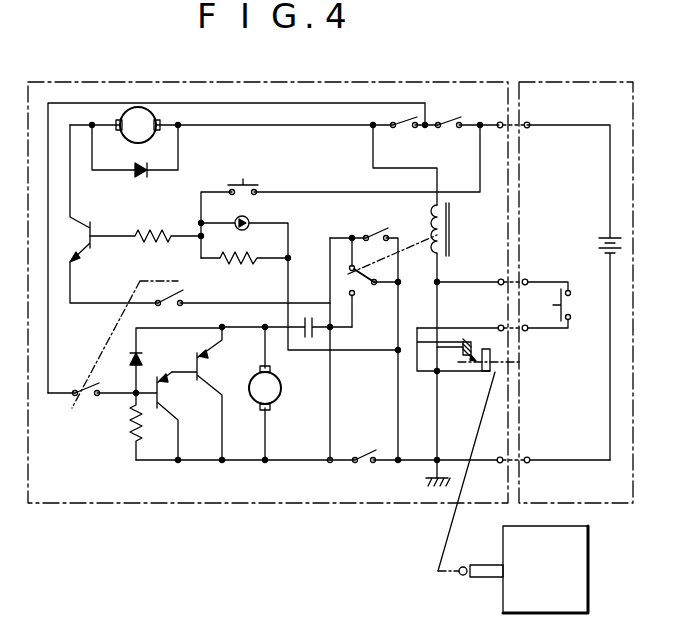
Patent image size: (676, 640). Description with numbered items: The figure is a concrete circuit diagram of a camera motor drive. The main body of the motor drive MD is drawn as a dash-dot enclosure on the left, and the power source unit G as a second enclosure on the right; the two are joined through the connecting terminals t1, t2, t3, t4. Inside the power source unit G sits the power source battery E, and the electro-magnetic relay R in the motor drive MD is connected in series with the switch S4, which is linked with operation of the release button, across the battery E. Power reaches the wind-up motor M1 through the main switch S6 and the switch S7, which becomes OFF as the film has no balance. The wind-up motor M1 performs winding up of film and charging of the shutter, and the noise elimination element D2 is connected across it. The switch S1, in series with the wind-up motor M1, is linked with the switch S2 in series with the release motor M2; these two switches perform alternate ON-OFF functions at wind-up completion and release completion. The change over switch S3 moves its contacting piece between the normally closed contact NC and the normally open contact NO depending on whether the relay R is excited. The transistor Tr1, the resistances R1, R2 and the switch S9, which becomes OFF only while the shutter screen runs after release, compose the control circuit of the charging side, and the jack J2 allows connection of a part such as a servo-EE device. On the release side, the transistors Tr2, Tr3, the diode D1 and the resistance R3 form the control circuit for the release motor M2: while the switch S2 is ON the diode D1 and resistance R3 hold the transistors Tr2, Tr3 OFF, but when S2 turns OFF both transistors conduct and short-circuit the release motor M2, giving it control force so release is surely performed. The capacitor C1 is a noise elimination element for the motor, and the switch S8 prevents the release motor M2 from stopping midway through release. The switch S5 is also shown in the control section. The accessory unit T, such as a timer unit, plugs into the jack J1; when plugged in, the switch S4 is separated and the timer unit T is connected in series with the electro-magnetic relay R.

The main body of a motor drive MD is at (318, 82).
The power source unit G is at (555, 82).
The wind-up motor M1 is at (140, 107).
The release motor M2 is at (281, 393).
The diode D1 is at (176, 360).
The noise elimination element D2 is at (135, 163).
The transistor Tr1 is at (114, 214).
The transistor Tr2 is at (168, 416).
The transistor Tr3 is at (201, 393).
The resistance R1 is at (145, 224).
The resistance R2 is at (244, 249).
The resistance R3 is at (150, 426).
The electro-magnetic relay R is at (421, 292).
The noise elimination element C1 is at (316, 342).
The jack J1 is at (468, 368).
The jack J2 is at (299, 274).
The switch S1 is at (201, 342).
The switch S2 is at (92, 406).
The change over switch S3 is at (392, 281).
The switch S4 is at (563, 308).
The switch S5 is at (364, 331).
The main switch S6 is at (468, 139).
The switch S7 is at (415, 139).
The switch S8 is at (286, 473).
The switch S9 is at (340, 191).
The normally closed contact NC is at (343, 268).
The normally open contact NO is at (350, 298).
The connecting terminal t1 is at (512, 114).
The connecting terminal t2 is at (502, 273).
The connecting terminal t3 is at (476, 317).
The connecting terminal t4 is at (523, 449).
The power source battery E is at (574, 292).
The accessory unit T is at (583, 592).